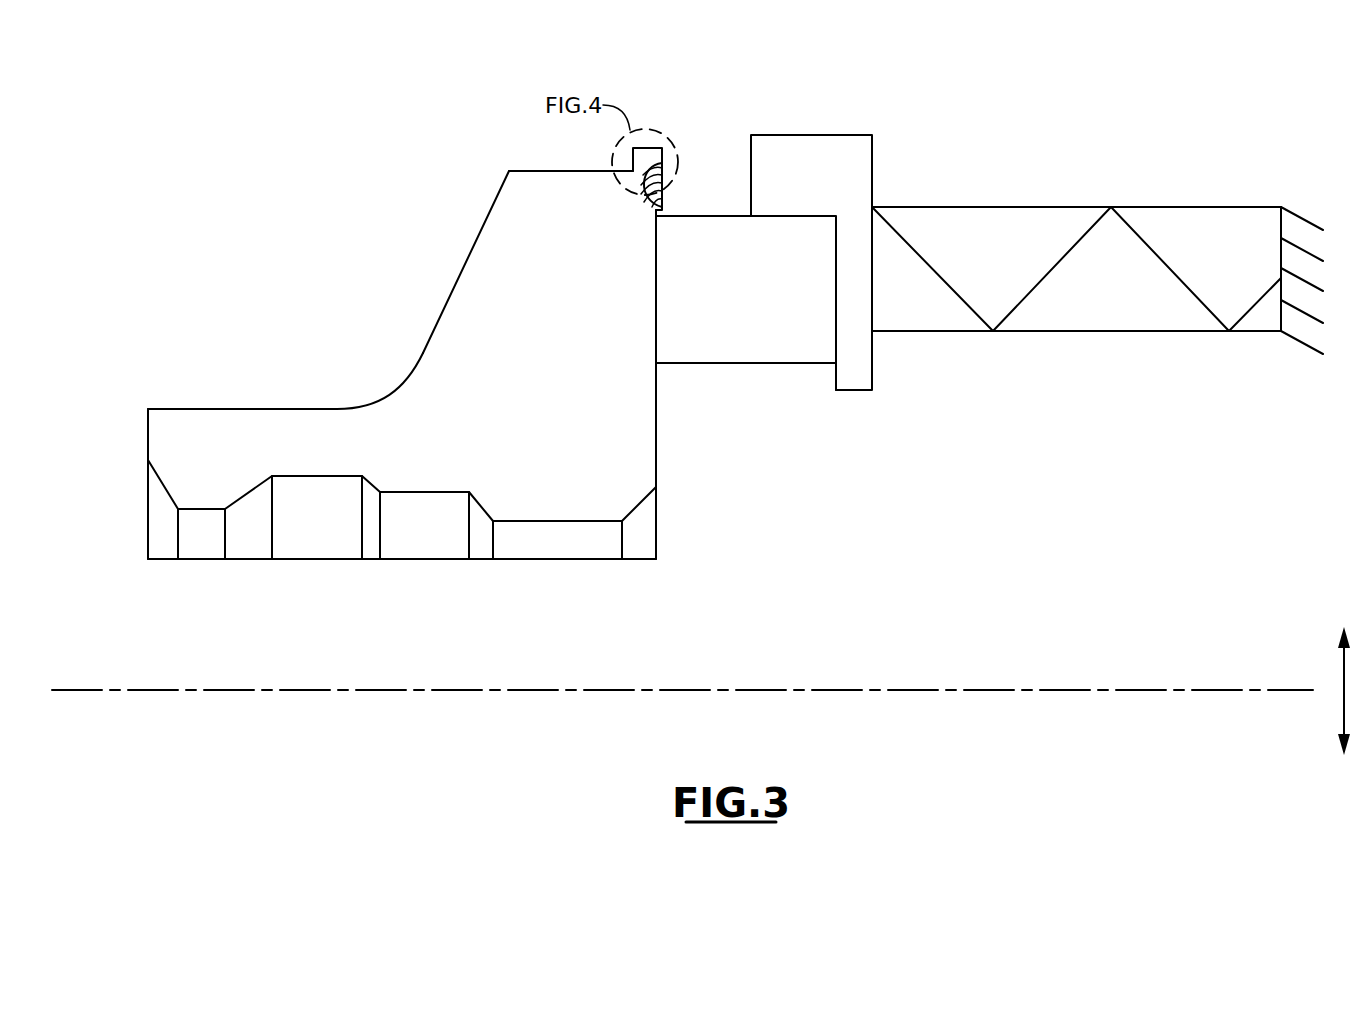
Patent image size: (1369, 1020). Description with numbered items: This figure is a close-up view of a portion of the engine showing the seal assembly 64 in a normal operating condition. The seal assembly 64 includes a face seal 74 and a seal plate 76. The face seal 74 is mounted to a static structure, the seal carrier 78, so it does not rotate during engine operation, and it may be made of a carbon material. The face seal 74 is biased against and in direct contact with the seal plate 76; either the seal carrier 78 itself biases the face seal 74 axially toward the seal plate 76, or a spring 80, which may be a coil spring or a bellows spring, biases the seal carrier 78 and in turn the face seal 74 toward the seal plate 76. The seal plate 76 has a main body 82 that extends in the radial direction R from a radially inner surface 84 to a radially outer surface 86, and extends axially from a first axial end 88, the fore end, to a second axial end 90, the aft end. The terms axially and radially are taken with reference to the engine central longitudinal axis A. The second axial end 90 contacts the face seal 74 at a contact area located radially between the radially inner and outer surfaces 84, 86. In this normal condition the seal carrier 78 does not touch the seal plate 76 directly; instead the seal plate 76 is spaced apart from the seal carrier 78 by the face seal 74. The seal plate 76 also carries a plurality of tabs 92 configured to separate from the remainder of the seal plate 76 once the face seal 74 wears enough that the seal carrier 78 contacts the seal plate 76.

The seal assembly 64 is at (750, 98).
The face seal 74 is at (733, 307).
The seal plate 76 is at (513, 380).
The seal carrier 78 is at (794, 192).
The spring 80 is at (1058, 207).
The main body 82 is at (490, 263).
The radially inner surface 84 is at (554, 524).
The radially outer surface 86 is at (541, 171).
The first axial end 88 is at (146, 440).
The second axial end 90 is at (656, 460).
The tabs 92 is at (660, 140).
The engine central longitudinal axis A is at (1062, 690).
The radial direction R is at (1344, 662).